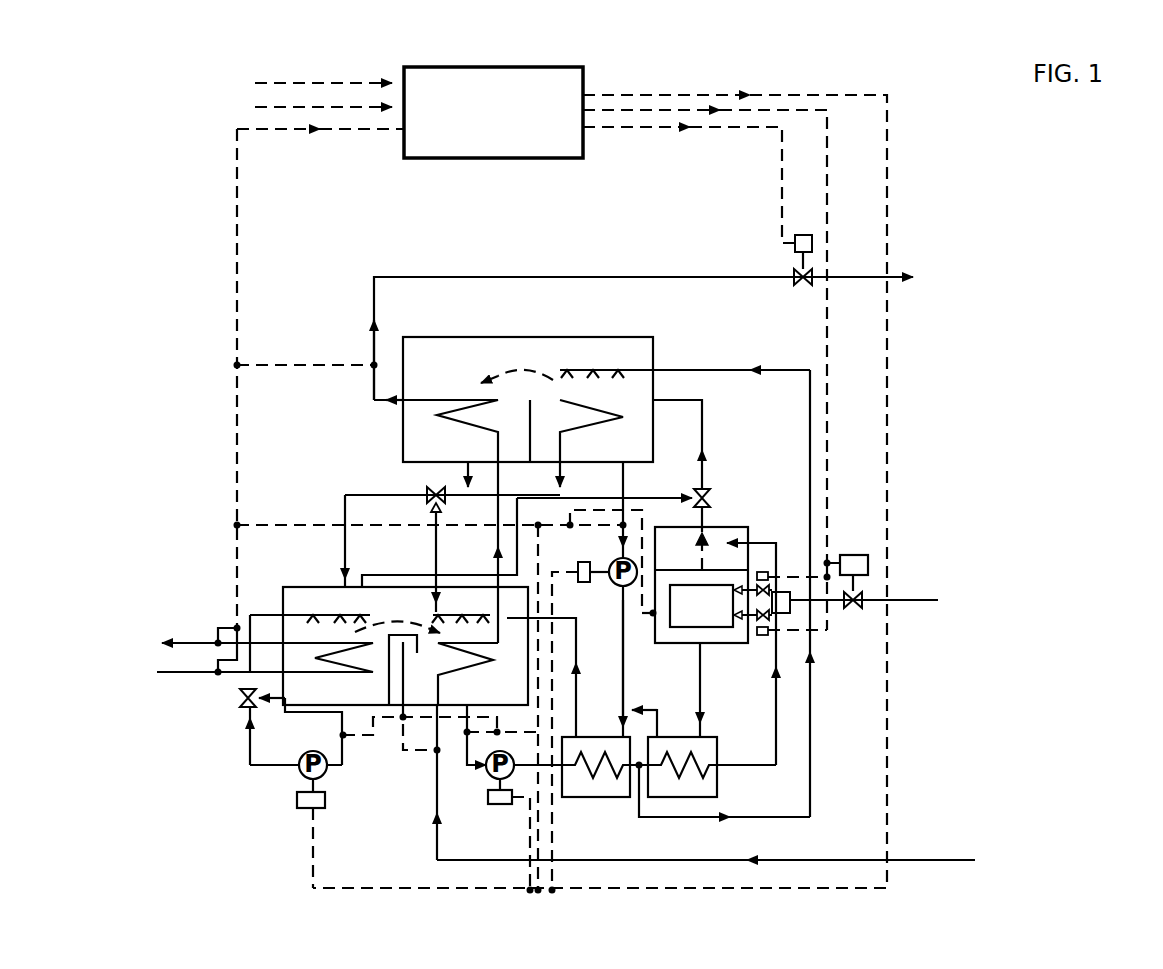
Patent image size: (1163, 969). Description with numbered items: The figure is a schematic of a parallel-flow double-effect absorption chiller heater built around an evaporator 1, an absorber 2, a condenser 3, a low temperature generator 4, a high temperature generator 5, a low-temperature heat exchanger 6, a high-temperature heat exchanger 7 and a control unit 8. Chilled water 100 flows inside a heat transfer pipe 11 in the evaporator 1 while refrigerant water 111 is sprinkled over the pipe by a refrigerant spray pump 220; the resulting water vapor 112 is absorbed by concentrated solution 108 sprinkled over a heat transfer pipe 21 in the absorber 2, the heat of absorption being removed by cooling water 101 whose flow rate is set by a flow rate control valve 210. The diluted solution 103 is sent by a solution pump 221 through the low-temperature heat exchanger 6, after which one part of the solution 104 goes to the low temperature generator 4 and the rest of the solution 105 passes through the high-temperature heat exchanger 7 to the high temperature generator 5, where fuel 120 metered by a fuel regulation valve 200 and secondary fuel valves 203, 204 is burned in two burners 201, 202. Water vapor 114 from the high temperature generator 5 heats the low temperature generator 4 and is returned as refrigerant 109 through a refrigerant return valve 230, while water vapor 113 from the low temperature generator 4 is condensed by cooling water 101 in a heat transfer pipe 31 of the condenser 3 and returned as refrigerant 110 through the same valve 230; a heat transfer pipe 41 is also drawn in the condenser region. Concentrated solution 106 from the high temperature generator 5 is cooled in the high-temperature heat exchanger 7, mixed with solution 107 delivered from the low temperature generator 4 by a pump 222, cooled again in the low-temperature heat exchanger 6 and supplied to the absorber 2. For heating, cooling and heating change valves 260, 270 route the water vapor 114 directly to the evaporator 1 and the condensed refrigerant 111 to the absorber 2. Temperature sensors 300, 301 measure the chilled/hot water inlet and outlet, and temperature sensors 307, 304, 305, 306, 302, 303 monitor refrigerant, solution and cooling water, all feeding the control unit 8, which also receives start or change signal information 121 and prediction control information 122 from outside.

The evaporator 1 is at (305, 586).
The absorber 2 is at (462, 582).
The condenser 3 is at (452, 337).
The low temperature generator 4 is at (614, 337).
The high temperature generator 5 is at (730, 527).
The low-temperature heat exchanger 6 is at (594, 797).
The high-temperature heat exchanger 7 is at (680, 797).
The control unit 8 is at (583, 72).
The heat transfer pipe 11 is at (352, 668).
The heat transfer pipe 21 is at (482, 662).
The heat transfer pipe 31 is at (425, 404).
The heat transfer tube in condenser 41 is at (610, 420).
The chilled water 100 is at (165, 674).
The cooling water 101 is at (538, 277).
The solution 103 is at (470, 772).
The solution 104 is at (706, 370).
The solution 105 is at (764, 766).
The solution 106 is at (698, 687).
The solution 107 is at (655, 487).
The concentrated solution 108 is at (578, 690).
The refrigerant 109 is at (563, 470).
The refrigerant 110 is at (440, 482).
The water 111 is at (343, 496).
The water vapor 112 is at (415, 626).
The water vapor 113 is at (498, 372).
The water vapor 114 is at (703, 402).
The fuel 120 is at (912, 600).
The start or cooling and heating change signal information 121 is at (284, 83).
The information for prediction control 122 is at (330, 107).
The fuel regulation valve 200 is at (850, 555).
The burner 201 is at (732, 590).
The burner 202 is at (740, 630).
The secondary fuel valve 203 is at (765, 572).
The secondary fuel valve 204 is at (762, 636).
The flow rate control valve 210 is at (790, 245).
The refrigerant spray pump 220 is at (300, 793).
The solution pump 221 is at (500, 804).
The pump 222 is at (584, 582).
The refrigerant return valve 230 is at (432, 507).
The cooling and heating change valve 260 is at (710, 490).
The cooling and heating change valve 270 is at (245, 710).
The temperature sensor 300 is at (220, 675).
The temperature sensor 301 is at (218, 638).
The temperature sensor 302 is at (466, 735).
The temperature sensor 303 is at (372, 367).
The temperature sensor 304 is at (436, 768).
The temperature sensor 305 is at (652, 618).
The temperature sensor 306 is at (620, 528).
The temperature sensor 307 is at (340, 735).